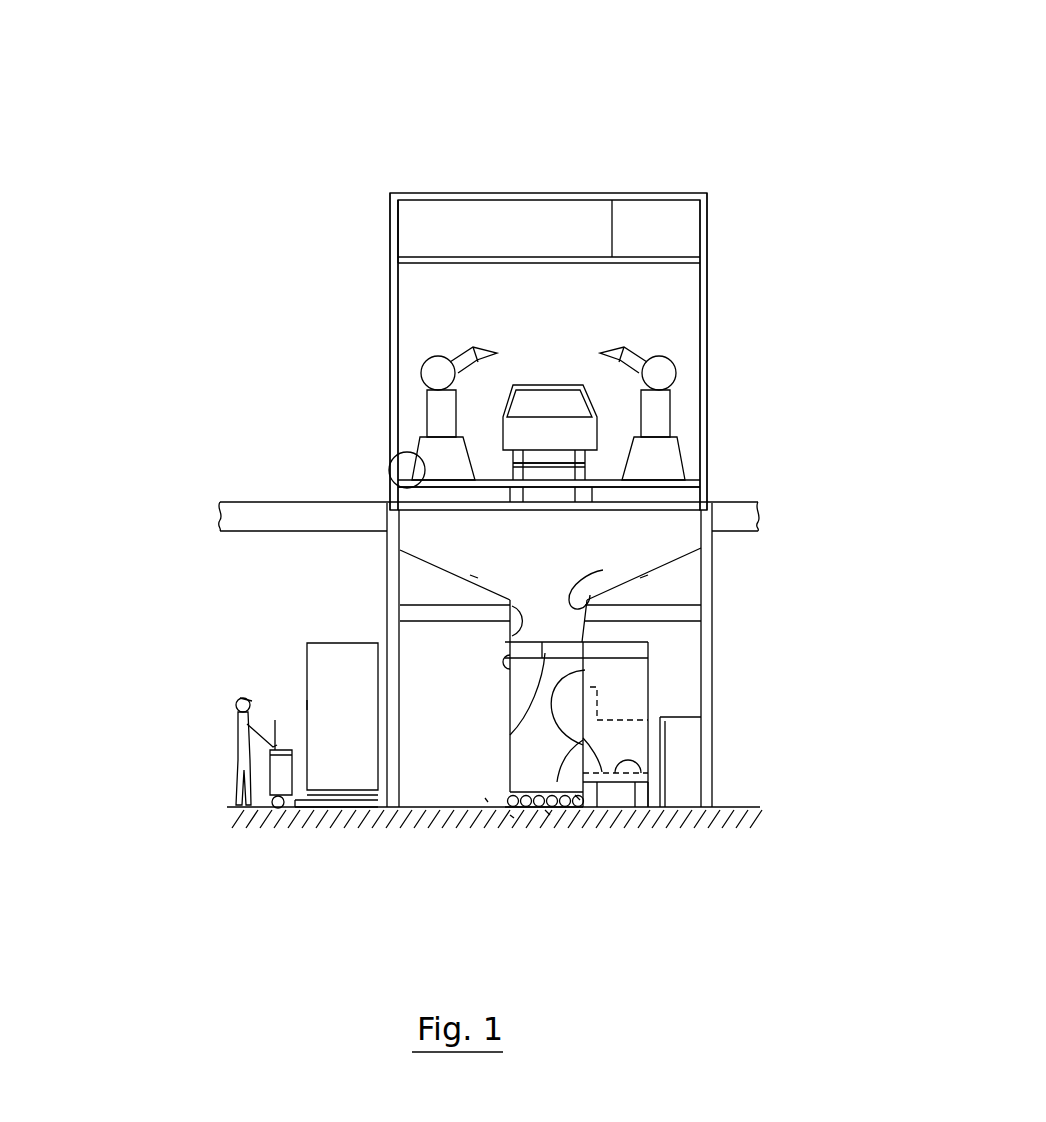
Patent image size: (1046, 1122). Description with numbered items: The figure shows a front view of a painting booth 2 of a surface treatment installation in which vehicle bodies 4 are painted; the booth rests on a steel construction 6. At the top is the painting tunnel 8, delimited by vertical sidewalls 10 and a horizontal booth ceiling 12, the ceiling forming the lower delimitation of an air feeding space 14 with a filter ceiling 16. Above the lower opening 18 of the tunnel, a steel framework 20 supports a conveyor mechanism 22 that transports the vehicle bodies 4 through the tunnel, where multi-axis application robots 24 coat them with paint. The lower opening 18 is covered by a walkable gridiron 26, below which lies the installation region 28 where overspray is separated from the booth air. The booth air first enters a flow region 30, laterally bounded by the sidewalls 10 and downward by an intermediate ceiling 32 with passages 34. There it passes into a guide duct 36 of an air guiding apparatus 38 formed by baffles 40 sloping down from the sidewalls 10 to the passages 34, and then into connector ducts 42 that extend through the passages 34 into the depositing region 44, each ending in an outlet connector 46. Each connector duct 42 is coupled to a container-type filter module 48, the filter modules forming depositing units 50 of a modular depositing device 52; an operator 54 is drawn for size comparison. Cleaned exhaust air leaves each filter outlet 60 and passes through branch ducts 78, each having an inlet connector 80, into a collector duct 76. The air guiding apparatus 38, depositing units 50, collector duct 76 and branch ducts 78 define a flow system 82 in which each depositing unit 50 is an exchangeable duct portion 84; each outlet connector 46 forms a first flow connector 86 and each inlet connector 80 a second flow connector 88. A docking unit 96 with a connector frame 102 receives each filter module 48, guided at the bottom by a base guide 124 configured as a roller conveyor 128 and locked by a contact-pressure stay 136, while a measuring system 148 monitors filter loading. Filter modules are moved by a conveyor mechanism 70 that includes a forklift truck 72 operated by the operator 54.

The painting booth 2 is at (348, 97).
The vehicle bodies 4 is at (553, 385).
The steel construction 6 is at (717, 560).
The painting tunnel 8 is at (670, 300).
The sidewalls 10 is at (392, 323).
The booth ceiling 12 is at (410, 254).
The air feeding space 14 is at (558, 242).
The filter ceiling 16 is at (612, 257).
The lower opening 18 is at (423, 453).
The steel framework 20 is at (655, 487).
The conveyor mechanism 22 is at (595, 465).
The application robots 24 is at (428, 398).
The gridiron 26 is at (595, 574).
The installation region 28 is at (363, 587).
The flow region 30 is at (423, 540).
The intermediate ceiling 32 is at (680, 613).
The passages 34 is at (650, 594).
The guide duct 36 is at (537, 543).
The air guiding apparatus 38 is at (680, 560).
The baffles 40 is at (470, 575).
The connector ducts 42 is at (520, 652).
The depositing region 44 is at (680, 687).
The outlet connector 46 is at (500, 662).
The filter module 48 is at (307, 705).
The depositing units 50 is at (320, 672).
The depositing device 52 is at (490, 710).
The operator 54 is at (240, 743).
The filter outlet 60 is at (600, 790).
The conveyor mechanism 70 is at (351, 822).
The forklift truck 72 is at (300, 805).
The collector duct 76 is at (688, 785).
The branch ducts 78 is at (630, 790).
The inlet connector 80 is at (575, 800).
The flow system 82 is at (663, 638).
The exchangeable duct portion 84 is at (303, 655).
The first flow connector 86 is at (513, 608).
The second flow connector 88 is at (585, 670).
The docking unit 96 is at (647, 705).
The connector frame 102 is at (523, 753).
The base guide 124 is at (548, 815).
The roller conveyor 128 is at (512, 817).
The contact-pressure stay 136 is at (413, 686).
The measuring system 148 is at (485, 800).